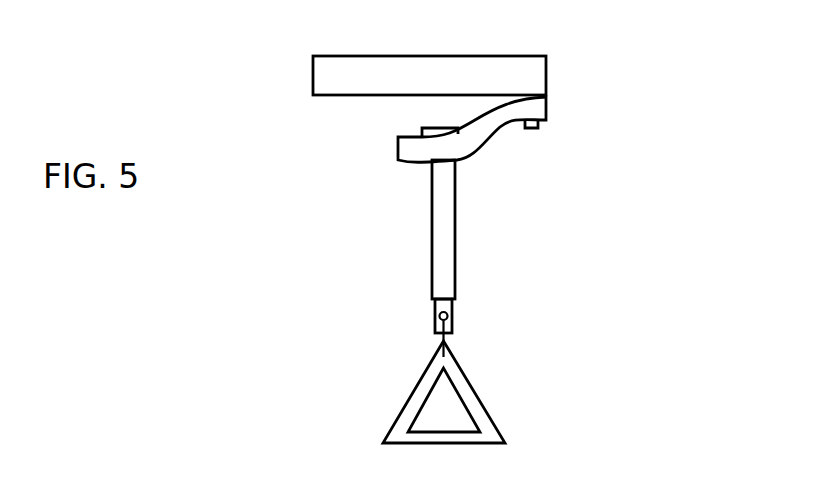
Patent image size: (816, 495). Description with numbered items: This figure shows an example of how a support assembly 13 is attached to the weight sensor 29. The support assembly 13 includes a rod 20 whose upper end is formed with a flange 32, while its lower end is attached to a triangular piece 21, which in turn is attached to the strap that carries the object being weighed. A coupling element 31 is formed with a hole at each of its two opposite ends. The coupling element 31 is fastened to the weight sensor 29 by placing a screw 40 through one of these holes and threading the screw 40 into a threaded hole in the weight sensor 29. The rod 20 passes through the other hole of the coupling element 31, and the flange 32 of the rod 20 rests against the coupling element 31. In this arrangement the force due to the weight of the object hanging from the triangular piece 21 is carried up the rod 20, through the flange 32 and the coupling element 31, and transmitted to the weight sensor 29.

The weight sensor 29 is at (546, 71).
The coupling element 31 is at (488, 143).
The flange 32 is at (423, 128).
The screw 40 is at (543, 125).
The rod 20 is at (455, 235).
The triangular piece 21 is at (467, 375).
The support assembly 13 is at (374, 280).